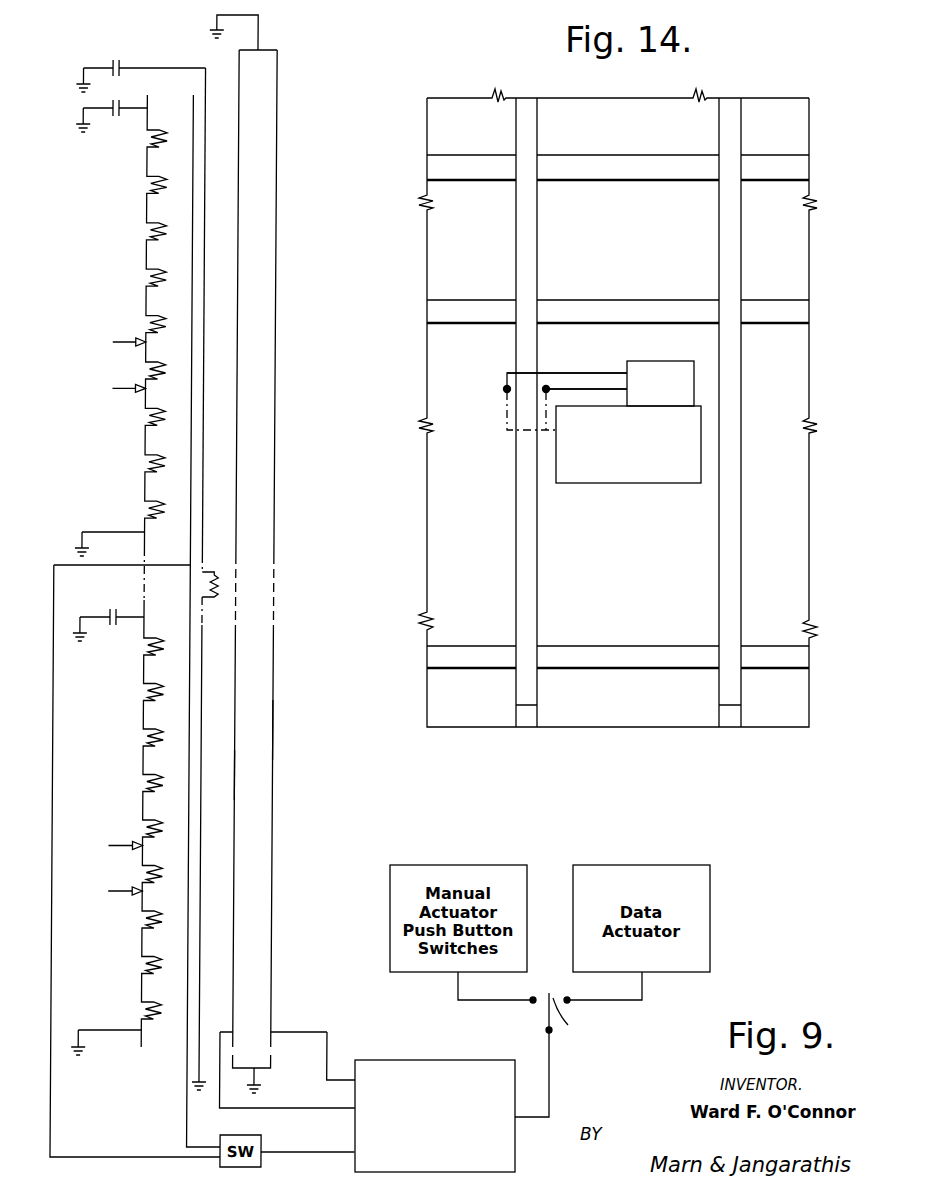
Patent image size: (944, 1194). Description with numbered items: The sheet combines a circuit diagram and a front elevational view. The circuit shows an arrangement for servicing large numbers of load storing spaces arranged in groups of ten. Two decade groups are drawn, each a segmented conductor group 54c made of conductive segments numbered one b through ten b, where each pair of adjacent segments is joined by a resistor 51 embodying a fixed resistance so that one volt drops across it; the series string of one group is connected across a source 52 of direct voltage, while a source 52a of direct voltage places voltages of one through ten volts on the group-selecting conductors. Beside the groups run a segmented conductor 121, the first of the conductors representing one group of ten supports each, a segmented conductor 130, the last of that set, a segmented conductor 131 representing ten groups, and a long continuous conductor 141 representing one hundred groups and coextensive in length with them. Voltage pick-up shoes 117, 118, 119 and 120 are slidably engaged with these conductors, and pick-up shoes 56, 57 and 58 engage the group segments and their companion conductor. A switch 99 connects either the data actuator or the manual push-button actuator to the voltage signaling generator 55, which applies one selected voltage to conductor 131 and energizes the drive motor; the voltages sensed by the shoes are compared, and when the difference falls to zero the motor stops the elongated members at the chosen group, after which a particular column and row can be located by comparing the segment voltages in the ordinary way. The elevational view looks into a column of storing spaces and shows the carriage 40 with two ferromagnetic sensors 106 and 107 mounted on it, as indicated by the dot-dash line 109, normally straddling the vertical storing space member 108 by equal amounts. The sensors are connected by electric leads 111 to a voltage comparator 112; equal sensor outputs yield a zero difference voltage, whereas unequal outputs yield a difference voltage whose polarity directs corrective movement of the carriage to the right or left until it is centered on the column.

In FIG. 9, the source of direct voltage 52a is at (116, 54).
In FIG. 9, the source of direct voltage 52 is at (118, 122).
In FIG. 9, the segmented conductor group 54c is at (120, 237).
In FIG. 9, the segmented conductor 130 is at (207, 305).
In FIG. 9, the voltage pick-up shoe 117 is at (206, 396).
In FIG. 9, the voltage pick-up shoe 120 is at (278, 442).
In FIG. 9, the resistor 51 is at (216, 586).
In FIG. 9, the voltage pick-up shoe 118 is at (206, 704).
In FIG. 9, the continuous conductor 141 is at (279, 710).
In FIG. 9, the segmented conductor 131 is at (240, 766).
In FIG. 9, the segmented conductor 121 is at (206, 795).
In FIG. 9, the voltage pick-up shoe 119 is at (240, 847).
In FIG. 9, the electric pick-up shoe 56 is at (117, 844).
In FIG. 9, the electric pick-up shoe 57 is at (116, 893).
In FIG. 9, the pick-up shoe 58 is at (58, 957).
In FIG. 9, the voltage signaling generator 55 is at (447, 1060).
In FIG. 9, the switch 99 is at (552, 1055).
In FIG. 14, the vertical storing space member 108 is at (520, 343).
In FIG. 14, the ferromagnetic sensor 106 is at (505, 389).
In FIG. 14, the ferromagnetic sensor 107 is at (546, 386).
In FIG. 14, the electric leads 111 is at (604, 389).
In FIG. 14, the voltage comparator 112 is at (678, 361).
In FIG. 14, the dot-dash line 109 is at (505, 409).
In FIG. 14, the carriage 40 is at (611, 483).